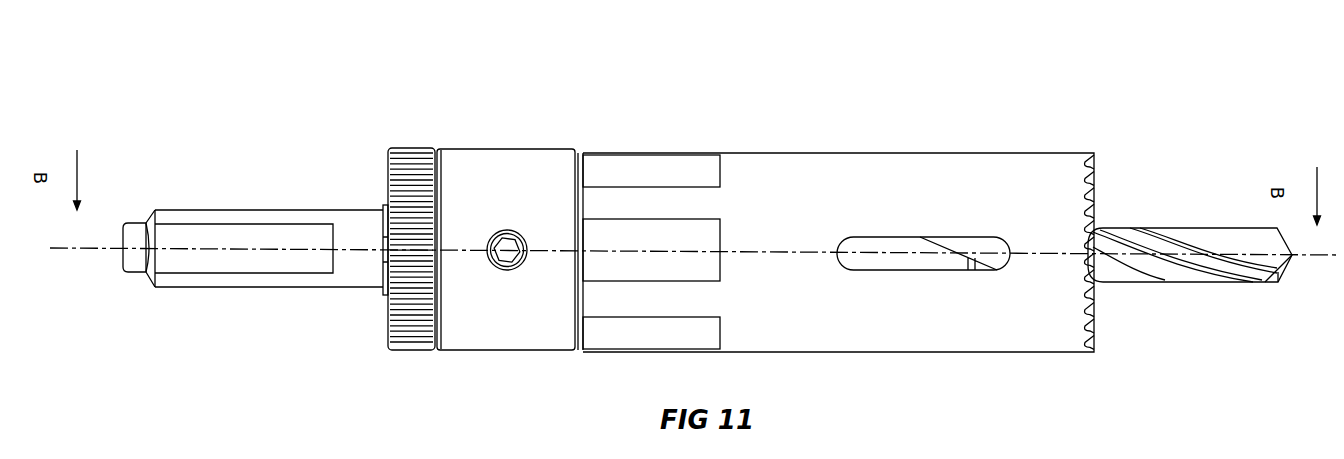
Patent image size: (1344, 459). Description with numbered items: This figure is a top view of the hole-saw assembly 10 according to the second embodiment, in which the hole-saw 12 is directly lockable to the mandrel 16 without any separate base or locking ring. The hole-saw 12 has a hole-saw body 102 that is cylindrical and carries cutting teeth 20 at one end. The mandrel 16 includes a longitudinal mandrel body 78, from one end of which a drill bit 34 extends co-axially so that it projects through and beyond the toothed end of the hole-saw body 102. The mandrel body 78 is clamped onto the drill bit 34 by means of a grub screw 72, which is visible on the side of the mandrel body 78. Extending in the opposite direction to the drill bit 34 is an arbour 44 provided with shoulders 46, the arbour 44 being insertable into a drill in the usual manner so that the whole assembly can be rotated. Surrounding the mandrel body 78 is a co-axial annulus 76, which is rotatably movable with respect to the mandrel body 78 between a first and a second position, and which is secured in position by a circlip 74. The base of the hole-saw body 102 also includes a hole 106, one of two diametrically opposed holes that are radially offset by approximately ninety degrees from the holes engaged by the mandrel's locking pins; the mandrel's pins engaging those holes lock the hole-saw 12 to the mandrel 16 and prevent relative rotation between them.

The hole-saw assembly 10 is at (869, 335).
The hole-saw 12 is at (1008, 364).
The mandrel 16 is at (463, 348).
The cutting teeth 20 is at (1097, 330).
The drill bit 34 is at (1177, 270).
The arbour 44 is at (345, 277).
The shoulders 46 is at (187, 265).
The grub screw 72 is at (505, 230).
The circlip 74 is at (383, 200).
The annulus 76 is at (385, 330).
The mandrel body 78 is at (517, 328).
The hole-saw body 102 is at (912, 330).
The hole 106 is at (868, 86).